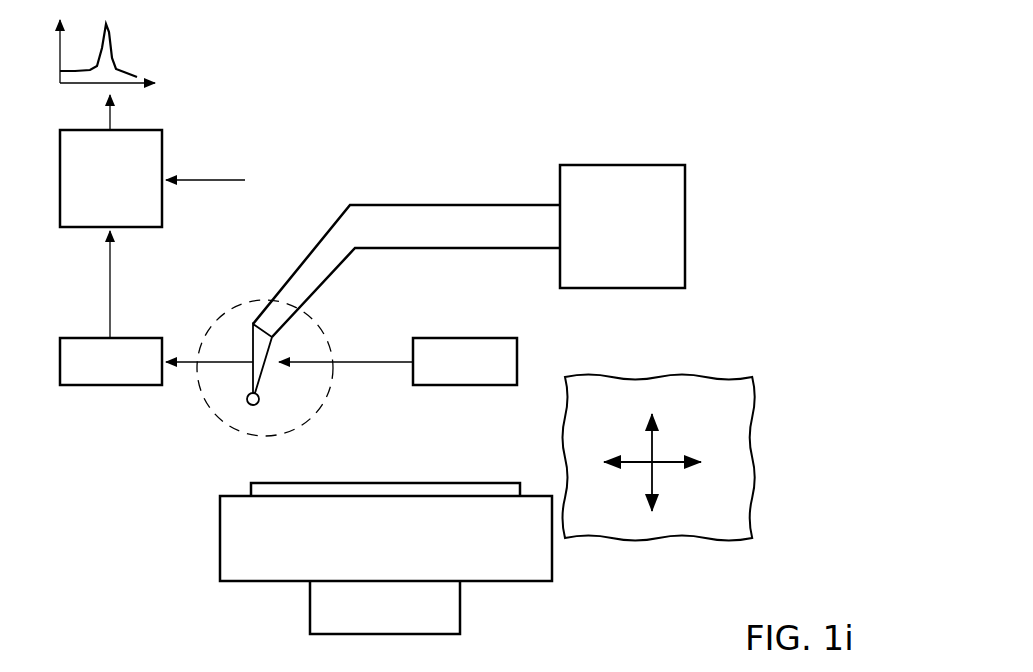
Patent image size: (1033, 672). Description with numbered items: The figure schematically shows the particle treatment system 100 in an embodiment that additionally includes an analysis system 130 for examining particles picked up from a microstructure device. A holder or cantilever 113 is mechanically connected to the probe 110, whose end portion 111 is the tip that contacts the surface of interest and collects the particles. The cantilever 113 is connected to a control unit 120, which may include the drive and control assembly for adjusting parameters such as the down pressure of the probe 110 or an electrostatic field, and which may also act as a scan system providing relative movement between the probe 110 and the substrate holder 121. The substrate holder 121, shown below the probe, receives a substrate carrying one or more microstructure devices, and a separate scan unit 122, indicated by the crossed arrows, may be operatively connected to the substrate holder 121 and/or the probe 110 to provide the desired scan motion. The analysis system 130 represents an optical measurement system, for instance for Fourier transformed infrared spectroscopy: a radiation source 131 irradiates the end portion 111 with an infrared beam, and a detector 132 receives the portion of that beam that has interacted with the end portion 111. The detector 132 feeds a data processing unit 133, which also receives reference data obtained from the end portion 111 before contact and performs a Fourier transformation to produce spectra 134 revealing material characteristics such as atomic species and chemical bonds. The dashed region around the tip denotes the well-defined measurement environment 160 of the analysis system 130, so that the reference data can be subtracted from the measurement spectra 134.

The particle treatment system 100 is at (770, 200).
The probe 110 is at (394, 279).
The end portion 111 is at (258, 372).
The holder or cantilever 113 is at (503, 204).
The control unit 120 is at (603, 277).
The substrate holder 121 is at (575, 574).
The scan unit 122 is at (752, 410).
The analysis system 130 is at (398, 325).
The radiation source 131 is at (446, 376).
The detector 132 is at (92, 376).
The data processing unit 133 is at (92, 211).
The spectra 134 is at (136, 54).
The measurement environment 160 is at (329, 338).